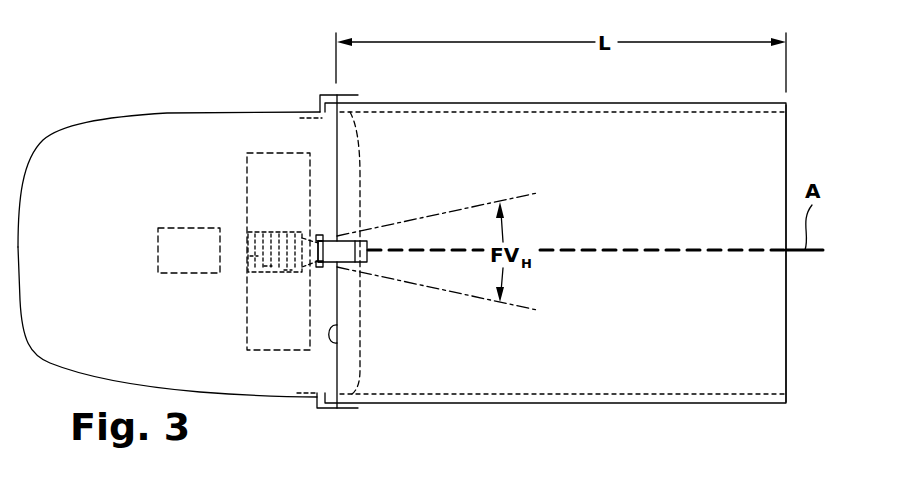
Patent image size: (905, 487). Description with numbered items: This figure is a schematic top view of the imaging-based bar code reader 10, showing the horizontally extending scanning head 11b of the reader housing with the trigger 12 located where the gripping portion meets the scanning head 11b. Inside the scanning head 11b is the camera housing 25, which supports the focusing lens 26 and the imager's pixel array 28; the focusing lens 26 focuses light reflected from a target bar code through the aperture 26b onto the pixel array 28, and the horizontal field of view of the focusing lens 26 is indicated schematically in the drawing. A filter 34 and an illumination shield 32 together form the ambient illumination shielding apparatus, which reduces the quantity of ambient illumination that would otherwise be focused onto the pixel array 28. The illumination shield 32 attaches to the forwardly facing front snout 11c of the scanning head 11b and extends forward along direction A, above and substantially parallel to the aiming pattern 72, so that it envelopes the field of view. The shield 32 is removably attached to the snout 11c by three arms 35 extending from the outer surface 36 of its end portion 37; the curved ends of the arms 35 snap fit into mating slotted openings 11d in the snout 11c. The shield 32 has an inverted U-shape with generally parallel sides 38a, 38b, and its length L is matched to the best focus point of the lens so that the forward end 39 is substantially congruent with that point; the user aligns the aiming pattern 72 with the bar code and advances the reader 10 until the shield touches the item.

The imaging-based bar code reader 10 is at (62, 100).
The scanning head 11b is at (160, 104).
The front snout 11c is at (360, 173).
The slotted openings 11d is at (305, 118).
The trigger 12 is at (195, 252).
The camera housing 25 is at (287, 153).
The focusing lens 26 is at (288, 270).
The aperture 26b is at (280, 232).
The pixel array 28 is at (253, 257).
The illumination shield 32 is at (577, 414).
The filter 34 is at (267, 266).
The arms 35 is at (340, 95).
The outer surface 36 is at (490, 360).
The end portion 37 is at (337, 325).
The side 38a is at (698, 404).
The side 38b is at (612, 103).
The forward end 39 is at (786, 366).
The aiming pattern 72 is at (810, 253).